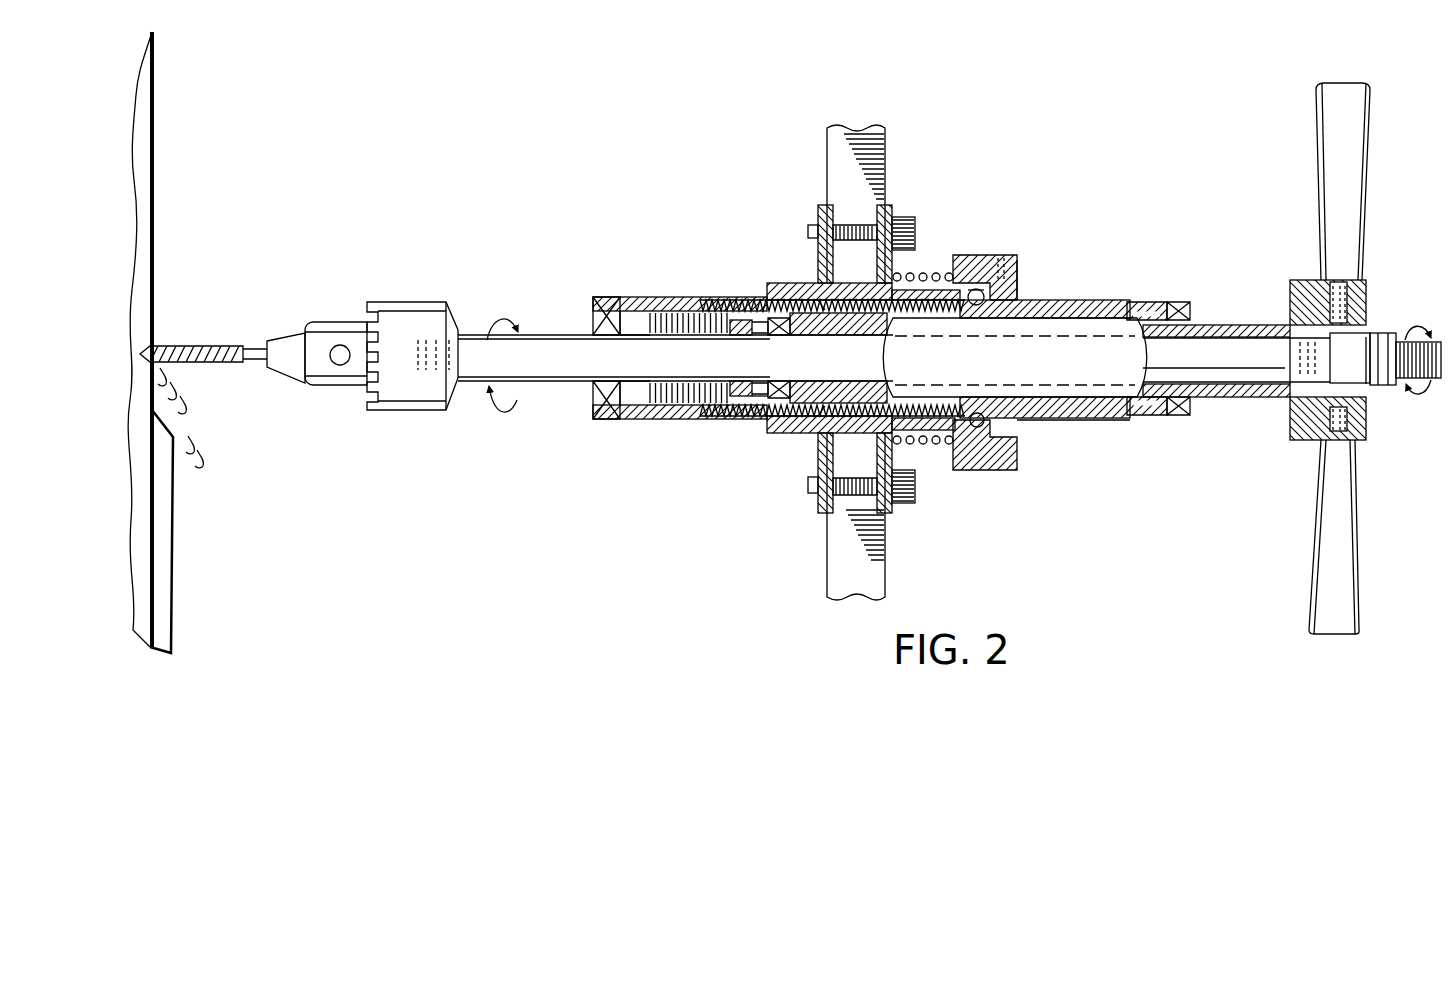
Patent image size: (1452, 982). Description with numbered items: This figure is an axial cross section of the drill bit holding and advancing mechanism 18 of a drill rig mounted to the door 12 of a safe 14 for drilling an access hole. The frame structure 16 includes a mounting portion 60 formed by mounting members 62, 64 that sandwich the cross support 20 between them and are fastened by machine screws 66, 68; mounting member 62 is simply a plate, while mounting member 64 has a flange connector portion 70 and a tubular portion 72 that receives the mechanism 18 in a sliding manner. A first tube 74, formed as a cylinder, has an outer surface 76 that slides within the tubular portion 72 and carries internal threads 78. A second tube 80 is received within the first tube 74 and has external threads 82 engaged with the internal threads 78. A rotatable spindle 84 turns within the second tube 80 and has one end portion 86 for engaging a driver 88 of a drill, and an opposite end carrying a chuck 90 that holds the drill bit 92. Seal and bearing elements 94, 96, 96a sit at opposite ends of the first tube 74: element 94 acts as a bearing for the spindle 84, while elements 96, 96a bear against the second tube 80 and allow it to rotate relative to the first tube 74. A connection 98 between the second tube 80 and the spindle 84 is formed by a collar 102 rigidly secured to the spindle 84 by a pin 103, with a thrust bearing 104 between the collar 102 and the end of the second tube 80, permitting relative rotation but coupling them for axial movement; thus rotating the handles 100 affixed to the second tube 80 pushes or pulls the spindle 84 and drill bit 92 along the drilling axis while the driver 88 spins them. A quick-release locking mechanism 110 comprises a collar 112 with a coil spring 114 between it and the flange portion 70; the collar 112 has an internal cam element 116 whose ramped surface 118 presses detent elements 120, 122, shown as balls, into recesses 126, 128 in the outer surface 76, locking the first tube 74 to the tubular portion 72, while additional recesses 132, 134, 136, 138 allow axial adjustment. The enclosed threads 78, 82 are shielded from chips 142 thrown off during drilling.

The door 12 is at (153, 126).
The safe 14 is at (156, 203).
The frame structure 16 is at (886, 131).
The drill bit holding and advancing mechanism 18 is at (1068, 286).
The cross support 20 is at (827, 588).
The mounting portion 60 is at (817, 209).
The mounting member 62 is at (818, 214).
The mounting member 64 is at (893, 206).
The machine screw 66 is at (913, 240).
The machine screw 68 is at (893, 508).
The flange connector portion 70 is at (915, 488).
The tubular portion 72 is at (779, 429).
The first tube 74 is at (1092, 301).
The outer surface 76 is at (1097, 420).
The internal threads 78 is at (684, 305).
The second tube 80 is at (846, 393).
The external threads 82 is at (818, 318).
The rotatable spindle 84 is at (549, 381).
The end portion 86 is at (1380, 333).
The driver 88 is at (1414, 384).
The chuck 90 is at (394, 304).
The drill bit 92 is at (178, 347).
The seal and bearing element 94 is at (593, 316).
The seal and bearing element 96 is at (1188, 307).
The seal and bearing element 96a is at (1160, 417).
The connection 98 is at (720, 392).
The handles 100 is at (1362, 164).
The collar 102 is at (740, 400).
The pin 103 is at (742, 319).
The thrust bearing 104 is at (776, 335).
The quick-release locking mechanism 110 is at (980, 253).
The collar 112 is at (985, 470).
The coil spring 114 is at (936, 449).
The cam element 116 is at (1018, 277).
The ramped surface 118 is at (1020, 430).
The detent element 120 is at (970, 298).
The detent element 122 is at (1008, 410).
The recess 126 is at (976, 306).
The recess 128 is at (976, 413).
The recess 132 is at (824, 300).
The recess 134 is at (826, 422).
The recess 136 is at (1139, 303).
The recess 138 is at (1134, 417).
The chips 142 is at (190, 447).